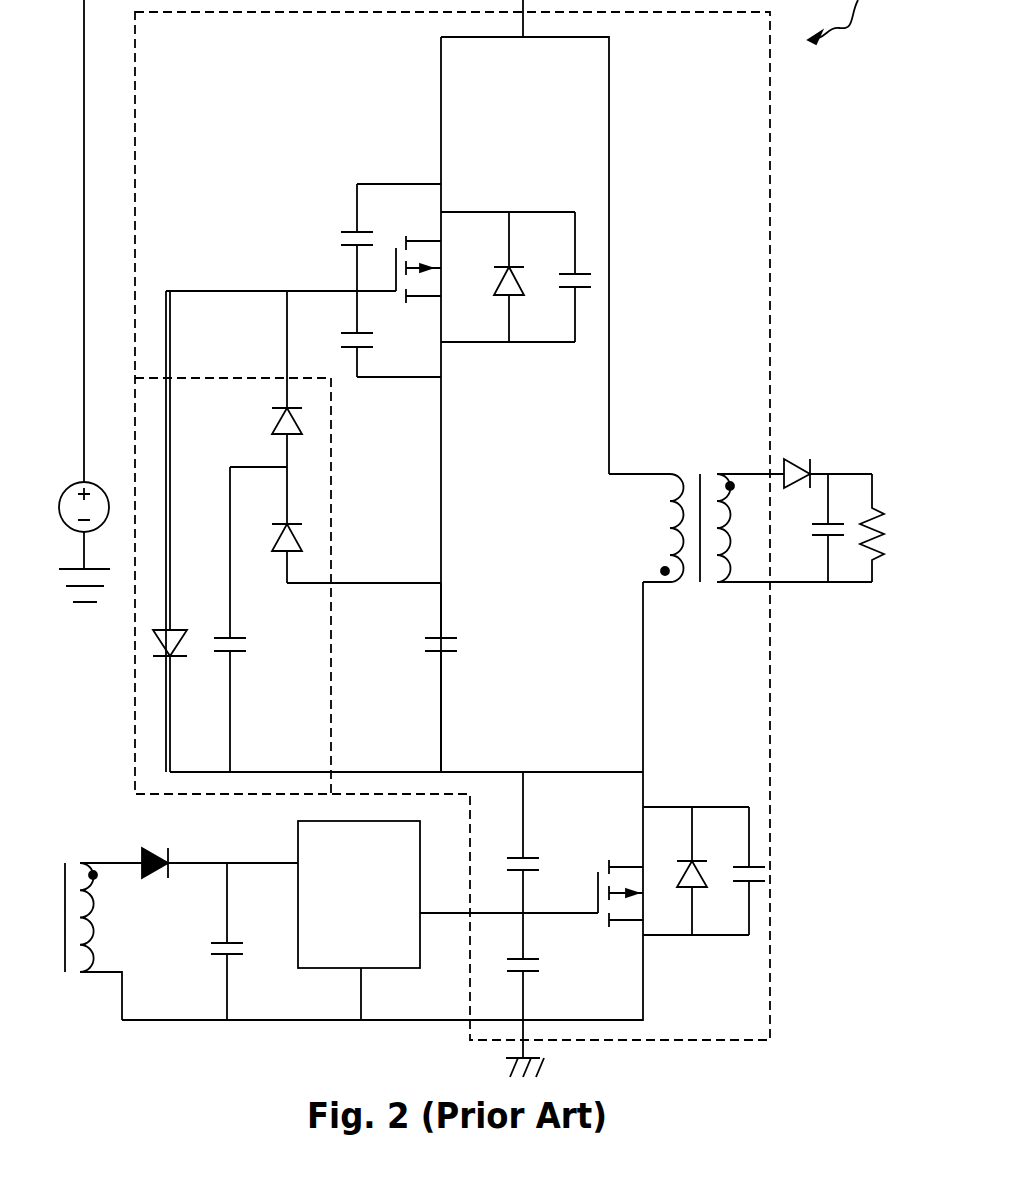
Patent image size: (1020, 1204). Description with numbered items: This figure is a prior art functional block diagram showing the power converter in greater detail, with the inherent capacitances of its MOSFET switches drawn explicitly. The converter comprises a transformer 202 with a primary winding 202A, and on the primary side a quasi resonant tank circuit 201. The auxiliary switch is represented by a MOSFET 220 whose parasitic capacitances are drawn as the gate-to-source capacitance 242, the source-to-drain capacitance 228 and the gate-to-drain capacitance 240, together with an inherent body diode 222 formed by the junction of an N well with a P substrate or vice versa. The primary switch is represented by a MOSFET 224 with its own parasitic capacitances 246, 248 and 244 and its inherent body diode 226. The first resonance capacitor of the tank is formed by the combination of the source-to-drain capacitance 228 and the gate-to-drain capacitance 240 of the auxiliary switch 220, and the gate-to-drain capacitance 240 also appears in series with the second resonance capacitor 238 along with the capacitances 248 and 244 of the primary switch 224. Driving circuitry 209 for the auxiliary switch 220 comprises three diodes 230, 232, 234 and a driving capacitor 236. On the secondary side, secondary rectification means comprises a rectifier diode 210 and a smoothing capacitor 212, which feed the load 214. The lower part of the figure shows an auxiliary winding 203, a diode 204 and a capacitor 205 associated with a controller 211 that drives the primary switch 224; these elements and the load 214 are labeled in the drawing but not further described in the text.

The quasi resonant tank circuit 201 is at (770, 238).
The transformer 202 is at (724, 488).
The primary winding 202A is at (648, 530).
The auxiliary winding 203 is at (66, 860).
The diode 204 is at (157, 882).
The capacitor 205 is at (213, 950).
The startup circuit 209 is at (220, 378).
The rectifier diode 210 is at (802, 452).
The controller 211 is at (448, 920).
The smoothing capacitor 212 is at (822, 542).
The load resistor 214 is at (885, 568).
The auxiliary switch MOSFET 220 is at (409, 236).
The inherent body diode 222 is at (520, 263).
The primary switch MOSFET 224 is at (626, 930).
The inherent body diode 226 is at (705, 897).
The source to drain parasitic capacitance Coss1 228 is at (597, 300).
The diode 230 is at (310, 532).
The diode 232 is at (265, 423).
The diode 234 is at (180, 662).
The driving capacitor 236 is at (258, 648).
The second resonance capacitor 238 is at (470, 648).
The gate to drain parasitic capacitance Crss1 240 is at (333, 236).
The gate to source parasitic capacitance Ciss1 242 is at (340, 340).
The parasitic capacitance Crss2 244 is at (545, 873).
The parasitic capacitance Ciss2 246 is at (545, 973).
The parasitic capacitance Coss2 248 is at (760, 845).